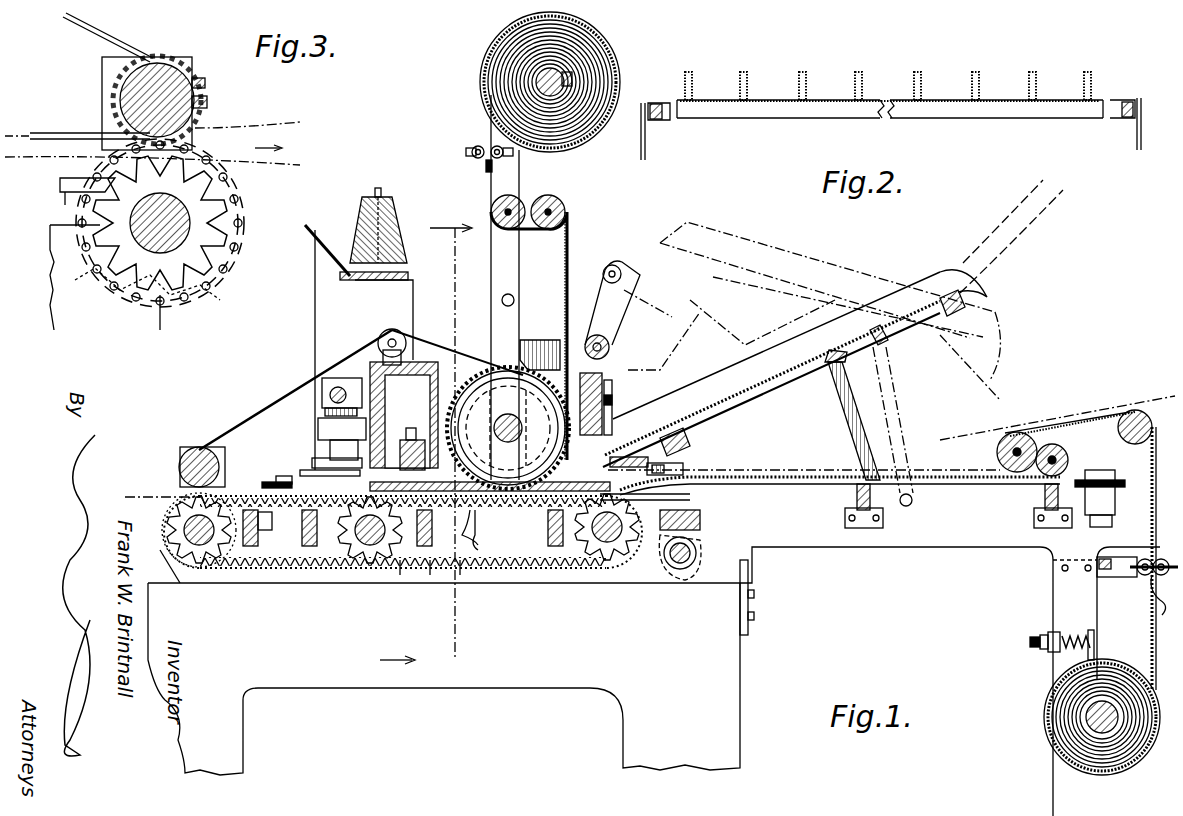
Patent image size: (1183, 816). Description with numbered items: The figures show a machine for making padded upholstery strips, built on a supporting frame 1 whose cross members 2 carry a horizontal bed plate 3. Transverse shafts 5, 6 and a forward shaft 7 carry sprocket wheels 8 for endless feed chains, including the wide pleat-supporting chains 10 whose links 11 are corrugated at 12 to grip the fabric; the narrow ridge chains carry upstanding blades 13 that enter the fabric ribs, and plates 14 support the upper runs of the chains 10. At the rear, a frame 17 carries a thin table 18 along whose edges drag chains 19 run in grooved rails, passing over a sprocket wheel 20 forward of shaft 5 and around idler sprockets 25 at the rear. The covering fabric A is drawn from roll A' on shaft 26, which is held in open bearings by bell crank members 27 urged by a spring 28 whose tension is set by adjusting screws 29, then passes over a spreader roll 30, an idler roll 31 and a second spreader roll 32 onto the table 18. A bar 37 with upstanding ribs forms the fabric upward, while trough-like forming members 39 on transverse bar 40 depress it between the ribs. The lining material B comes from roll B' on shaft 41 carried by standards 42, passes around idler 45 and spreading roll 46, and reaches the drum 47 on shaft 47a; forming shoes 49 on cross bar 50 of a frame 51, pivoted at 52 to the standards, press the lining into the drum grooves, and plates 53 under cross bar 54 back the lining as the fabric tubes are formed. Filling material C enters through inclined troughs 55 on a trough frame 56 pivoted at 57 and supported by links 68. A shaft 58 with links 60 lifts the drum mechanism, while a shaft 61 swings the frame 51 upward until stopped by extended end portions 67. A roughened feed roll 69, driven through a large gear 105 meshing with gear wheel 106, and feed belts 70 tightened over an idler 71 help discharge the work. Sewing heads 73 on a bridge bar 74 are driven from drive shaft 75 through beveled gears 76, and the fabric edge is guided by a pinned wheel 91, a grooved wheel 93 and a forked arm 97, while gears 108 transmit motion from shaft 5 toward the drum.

In FIG. 1, the supporting frame 1 is at (514, 685).
In FIG. 1, the cross members 2 is at (770, 312).
In FIG. 1, the bed plate 3 is at (504, 512).
In FIG. 1, the transverse shaft 5 is at (358, 568).
In FIG. 1, the transverse shaft 6 is at (605, 560).
In FIG. 3, the forward transverse shaft 7 is at (222, 245).
In FIG. 1, the forward transverse shaft 7 is at (178, 532).
In FIG. 1, the sprocket wheels 8 is at (175, 548).
In FIG. 3, the feed pleat-supporting chains 10 is at (245, 204).
In FIG. 1, the feed pleat-supporting chains 10 is at (296, 572).
In FIG. 1, the links 11 is at (240, 568).
In FIG. 1, the corrugated surface of link 12 is at (275, 570).
In FIG. 1, the blades 13 is at (492, 575).
In FIG. 3, the plates 14 is at (55, 190).
In FIG. 1, the plates 14 is at (210, 560).
In FIG. 1, the frame 17 is at (1012, 540).
In FIG. 1, the table 18 is at (940, 487).
In FIG. 1, the drag chains 19 is at (264, 480).
In FIG. 1, the sprocket wheel 20 is at (280, 476).
In FIG. 1, the idler sprockets 25 is at (1108, 478).
In FIG. 1, the roll shaft 26 is at (1090, 725).
In FIG. 1, the bell crank members 27 is at (1090, 660).
In FIG. 1, the spring 28 is at (1078, 635).
In FIG. 1, the adjusting screws 29 is at (1030, 642).
In FIG. 1, the spreader roll 30 is at (1120, 428).
In FIG. 1, the idler roll 31 is at (996, 453).
In FIG. 1, the second spreader roll 32 is at (1058, 452).
In FIG. 1, the bar 37 is at (690, 497).
In FIG. 1, the forming members 39 is at (684, 470).
In FIG. 1, the transverse bar 40 is at (655, 462).
In FIG. 1, the shaft 41 is at (548, 82).
In FIG. 1, the standards 42 is at (512, 176).
In FIG. 1, the idler 45 is at (492, 208).
In FIG. 1, the spreading and straightening roll 46 is at (560, 205).
In FIG. 1, the drum 47 is at (508, 428).
In FIG. 1, the drum shaft 47a is at (506, 442).
In FIG. 1, the forming shoes 49 is at (602, 367).
In FIG. 1, the cross bar 50 is at (612, 400).
In FIG. 1, the frame 51 is at (540, 335).
In FIG. 1, the pivot 52 is at (502, 301).
In FIG. 1, the plates 53 is at (455, 395).
In FIG. 1, the cross bar 54 is at (413, 436).
In FIG. 2, the inclined troughs 55 is at (825, 95).
In FIG. 1, the inclined troughs 55 is at (885, 320).
In FIG. 2, the trough frame 56 is at (798, 118).
In FIG. 1, the trough frame 56 is at (932, 318).
In FIG. 1, the pivot 57 is at (692, 440).
In FIG. 1, the shaft 58 is at (675, 565).
In FIG. 1, the links 60 is at (700, 540).
In FIG. 1, the shaft 61 is at (610, 345).
In FIG. 1, the extended end portion 67 is at (622, 268).
In FIG. 2, the links 68 is at (648, 151).
In FIG. 1, the links 68 is at (860, 438).
In FIG. 3, the feed roll 69 is at (196, 88).
In FIG. 1, the feed roll 69 is at (180, 468).
In FIG. 3, the feed belts 70 is at (60, 133).
In FIG. 1, the feed belts 70 is at (275, 400).
In FIG. 1, the idler 71 is at (378, 340).
In FIG. 1, the sewing heads 73 is at (320, 435).
In FIG. 1, the bridge bar 74 is at (380, 392).
In FIG. 1, the drive shaft 75 is at (338, 388).
In FIG. 1, the beveled gears 76 is at (326, 410).
In FIG. 1, the wheel 91 is at (1163, 576).
In FIG. 1, the grooved wheel 93 is at (1142, 576).
In FIG. 1, the forked arm 97 is at (1164, 609).
In FIG. 3, the large gear 105 is at (212, 290).
In FIG. 3, the gear wheel 106 is at (208, 102).
In FIG. 1, the gears 108 is at (483, 537).
In FIG. 1, the covering or surface fabric A is at (1033, 551).
In FIG. 1, the fabric roll A' is at (1084, 717).
In FIG. 1, the lining material B is at (545, 336).
In FIG. 1, the lining roll B' is at (566, 82).
In FIG. 1, the filling or stuffing material C is at (1002, 227).